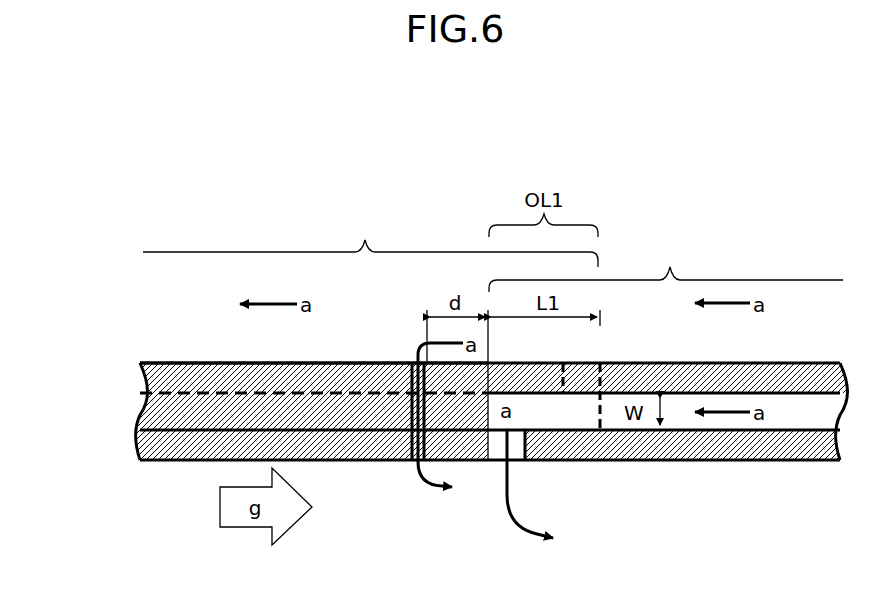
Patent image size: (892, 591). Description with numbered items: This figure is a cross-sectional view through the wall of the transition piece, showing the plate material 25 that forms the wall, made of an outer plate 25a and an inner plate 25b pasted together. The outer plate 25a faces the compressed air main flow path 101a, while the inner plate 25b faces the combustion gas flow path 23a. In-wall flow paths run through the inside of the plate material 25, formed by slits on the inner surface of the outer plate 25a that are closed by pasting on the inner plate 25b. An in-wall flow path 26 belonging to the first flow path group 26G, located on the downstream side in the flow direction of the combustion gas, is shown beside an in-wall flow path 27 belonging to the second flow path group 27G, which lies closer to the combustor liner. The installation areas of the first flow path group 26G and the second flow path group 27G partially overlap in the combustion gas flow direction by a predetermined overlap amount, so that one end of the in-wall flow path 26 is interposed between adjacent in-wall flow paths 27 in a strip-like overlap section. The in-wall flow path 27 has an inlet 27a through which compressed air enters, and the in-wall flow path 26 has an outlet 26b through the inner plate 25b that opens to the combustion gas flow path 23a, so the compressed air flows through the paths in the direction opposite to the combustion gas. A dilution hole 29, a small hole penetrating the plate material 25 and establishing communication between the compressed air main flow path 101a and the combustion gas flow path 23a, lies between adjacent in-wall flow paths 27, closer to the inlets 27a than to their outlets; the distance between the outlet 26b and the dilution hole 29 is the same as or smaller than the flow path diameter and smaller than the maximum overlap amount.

The combustion gas flow path 23a is at (758, 507).
The plate material 25 is at (441, 413).
The outer plate 25a is at (143, 413).
The inner plate 25b is at (141, 453).
The in-wall flow path 26 is at (546, 424).
The outlet 26b is at (497, 462).
The first flow path group 26G is at (666, 264).
The in-wall flow path 27 is at (271, 421).
The inlet 27a is at (566, 372).
The second flow path group 27G is at (370, 238).
The dilution hole 29 is at (410, 462).
The compressed air main flow path 101a is at (754, 349).